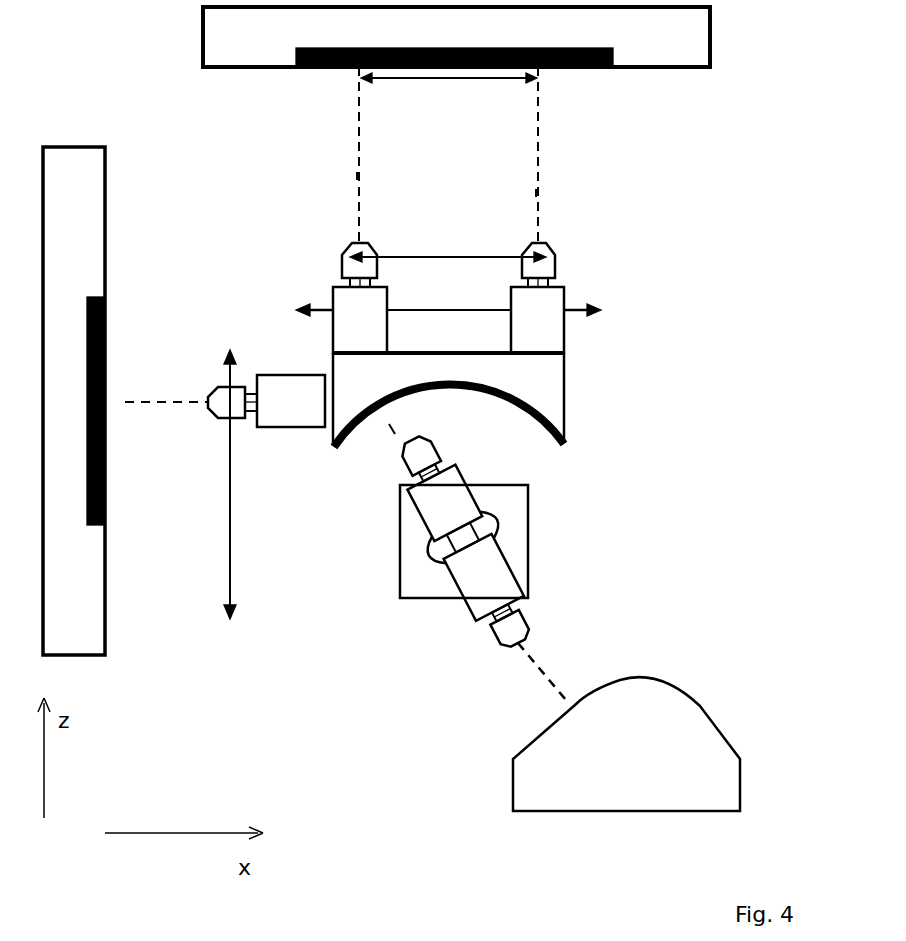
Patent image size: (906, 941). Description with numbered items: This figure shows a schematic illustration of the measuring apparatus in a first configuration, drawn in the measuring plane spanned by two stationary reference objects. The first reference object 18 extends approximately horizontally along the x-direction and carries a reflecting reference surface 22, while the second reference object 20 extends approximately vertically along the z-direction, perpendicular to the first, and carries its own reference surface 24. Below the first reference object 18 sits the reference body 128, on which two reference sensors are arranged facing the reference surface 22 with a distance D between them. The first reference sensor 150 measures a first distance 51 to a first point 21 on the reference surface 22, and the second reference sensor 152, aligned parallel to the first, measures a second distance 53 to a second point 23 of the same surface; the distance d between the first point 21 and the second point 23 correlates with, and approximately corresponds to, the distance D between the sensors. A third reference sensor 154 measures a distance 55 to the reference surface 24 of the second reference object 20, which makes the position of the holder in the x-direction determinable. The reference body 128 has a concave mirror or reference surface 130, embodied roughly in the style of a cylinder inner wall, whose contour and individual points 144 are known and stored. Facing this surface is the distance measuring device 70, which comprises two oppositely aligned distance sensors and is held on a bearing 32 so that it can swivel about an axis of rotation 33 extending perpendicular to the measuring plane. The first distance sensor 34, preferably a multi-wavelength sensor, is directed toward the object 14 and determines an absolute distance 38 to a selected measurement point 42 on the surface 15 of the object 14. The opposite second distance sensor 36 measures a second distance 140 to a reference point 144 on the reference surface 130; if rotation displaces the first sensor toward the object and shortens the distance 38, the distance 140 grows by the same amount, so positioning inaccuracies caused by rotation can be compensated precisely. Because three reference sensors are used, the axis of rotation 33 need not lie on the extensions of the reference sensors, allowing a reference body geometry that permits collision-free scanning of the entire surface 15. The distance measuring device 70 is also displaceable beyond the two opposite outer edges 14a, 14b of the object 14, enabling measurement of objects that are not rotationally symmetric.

The object 14 is at (611, 786).
The outer edge 14a is at (513, 785).
The outer edge 14b is at (742, 783).
The surface 15 is at (668, 688).
The reference object 18 is at (712, 42).
The second reference object 20 is at (95, 222).
The first point 21 is at (358, 78).
The reference surface 22 is at (596, 70).
The second point 23 is at (540, 78).
The reference surface 24 is at (105, 315).
The bearing 32 is at (528, 537).
The axis of rotation 33 is at (467, 543).
The first distance sensor 34 is at (515, 582).
The second distance sensor 36 is at (450, 480).
The distance 38 is at (550, 680).
The measurement point 42 is at (568, 700).
The first distance 51 is at (360, 176).
The second distance 53 is at (539, 193).
The distance 55 is at (165, 405).
The distance measuring device 70 is at (614, 423).
The reference body 128 is at (560, 392).
The reference surface 130 is at (352, 436).
The second distance 140 is at (392, 430).
The reference point 144 is at (395, 412).
The first reference sensor 150 is at (378, 339).
The second reference sensor 152 is at (560, 338).
The third reference sensor 154 is at (273, 420).
The distance d is at (441, 80).
The distance D is at (463, 256).